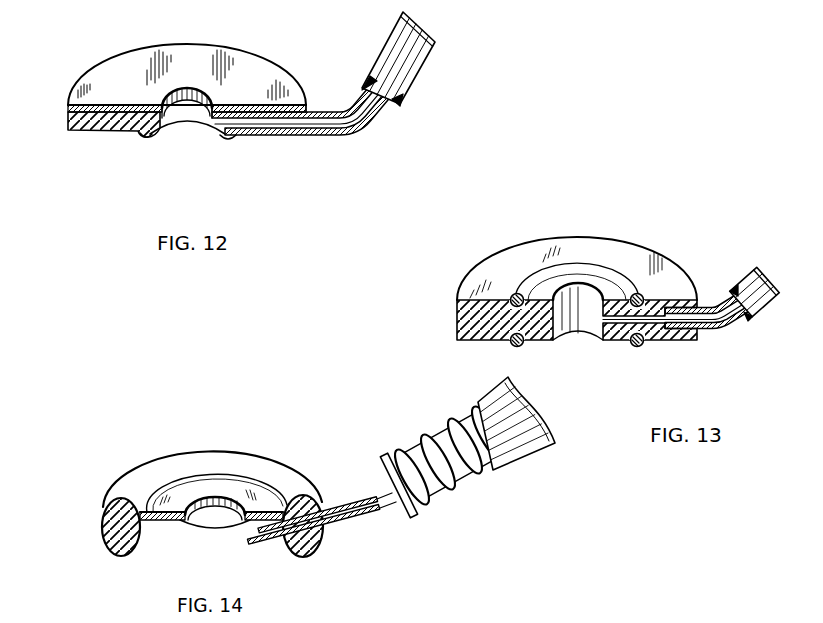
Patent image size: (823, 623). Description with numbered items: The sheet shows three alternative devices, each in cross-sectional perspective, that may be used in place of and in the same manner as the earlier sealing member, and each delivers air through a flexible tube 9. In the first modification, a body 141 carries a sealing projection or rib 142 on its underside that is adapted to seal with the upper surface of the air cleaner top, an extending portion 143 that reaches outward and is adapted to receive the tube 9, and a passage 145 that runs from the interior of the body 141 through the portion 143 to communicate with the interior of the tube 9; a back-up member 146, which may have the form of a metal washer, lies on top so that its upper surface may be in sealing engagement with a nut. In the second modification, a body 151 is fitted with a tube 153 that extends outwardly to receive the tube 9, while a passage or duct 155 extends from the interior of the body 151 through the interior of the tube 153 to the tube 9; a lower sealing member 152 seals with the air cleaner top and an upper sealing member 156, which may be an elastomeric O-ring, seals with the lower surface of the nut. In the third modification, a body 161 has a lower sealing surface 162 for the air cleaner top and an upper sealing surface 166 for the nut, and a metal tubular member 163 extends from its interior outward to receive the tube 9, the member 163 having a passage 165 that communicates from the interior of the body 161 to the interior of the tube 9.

In FIG. 12, the tube 9 is at (414, 67).
In FIG. 13, the tube 9 is at (760, 272).
In FIG. 14, the tube 9 is at (555, 446).
In FIG. 12, the body 141 is at (68, 119).
In FIG. 12, the sealing projection or rib 142 is at (145, 138).
In FIG. 12, the extending portion 143 is at (361, 136).
In FIG. 12, the passage 145 is at (325, 126).
In FIG. 12, the back-up member 146 is at (68, 106).
In FIG. 13, the body 151 is at (457, 324).
In FIG. 13, the lower sealing member 152 is at (516, 345).
In FIG. 13, the tube 153 is at (727, 326).
In FIG. 13, the passage or duct 155 is at (705, 320).
In FIG. 13, the upper sealing member 156 is at (601, 270).
In FIG. 14, the body 161 is at (102, 528).
In FIG. 14, the lower sealing surface 162 is at (118, 556).
In FIG. 14, the metal tubular member 163 is at (348, 522).
In FIG. 14, the passage 165 is at (347, 504).
In FIG. 14, the upper sealing surface 166 is at (168, 454).